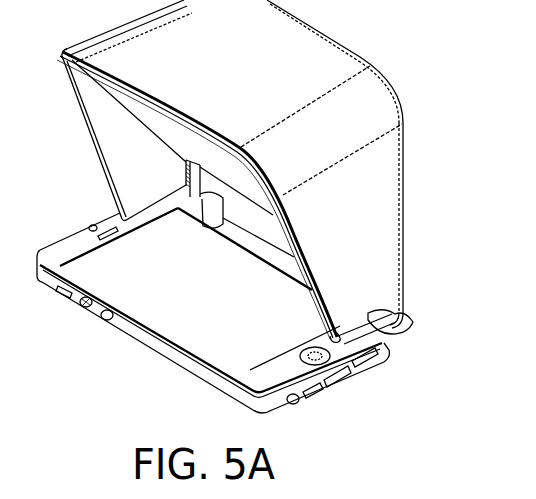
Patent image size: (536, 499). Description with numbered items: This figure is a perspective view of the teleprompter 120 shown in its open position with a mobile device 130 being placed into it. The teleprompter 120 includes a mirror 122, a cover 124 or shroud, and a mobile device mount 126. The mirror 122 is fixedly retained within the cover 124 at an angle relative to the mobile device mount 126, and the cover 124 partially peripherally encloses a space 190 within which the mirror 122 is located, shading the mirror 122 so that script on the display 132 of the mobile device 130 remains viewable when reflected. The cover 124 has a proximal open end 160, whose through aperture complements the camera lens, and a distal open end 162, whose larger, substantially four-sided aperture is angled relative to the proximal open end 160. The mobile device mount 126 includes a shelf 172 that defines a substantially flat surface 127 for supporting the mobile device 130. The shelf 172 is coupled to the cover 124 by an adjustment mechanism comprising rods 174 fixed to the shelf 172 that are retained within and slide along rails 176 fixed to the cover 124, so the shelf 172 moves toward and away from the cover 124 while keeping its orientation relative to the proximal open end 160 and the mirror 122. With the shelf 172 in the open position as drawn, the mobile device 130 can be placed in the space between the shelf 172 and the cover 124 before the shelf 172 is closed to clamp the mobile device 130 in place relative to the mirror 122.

The teleprompter 120 is at (362, 58).
The mirror 122 is at (143, 102).
The cover 124 is at (153, 53).
The mobile device mount 126 is at (413, 320).
The substantially flat surface 127 is at (408, 329).
The mobile device 130 is at (68, 303).
The display 132 is at (225, 345).
The proximal open end 160 is at (402, 96).
The distal open end 162 is at (84, 134).
The shelf 172 is at (393, 350).
The rods 174 is at (203, 226).
The rails 176 is at (204, 182).
The space 190 is at (107, 127).